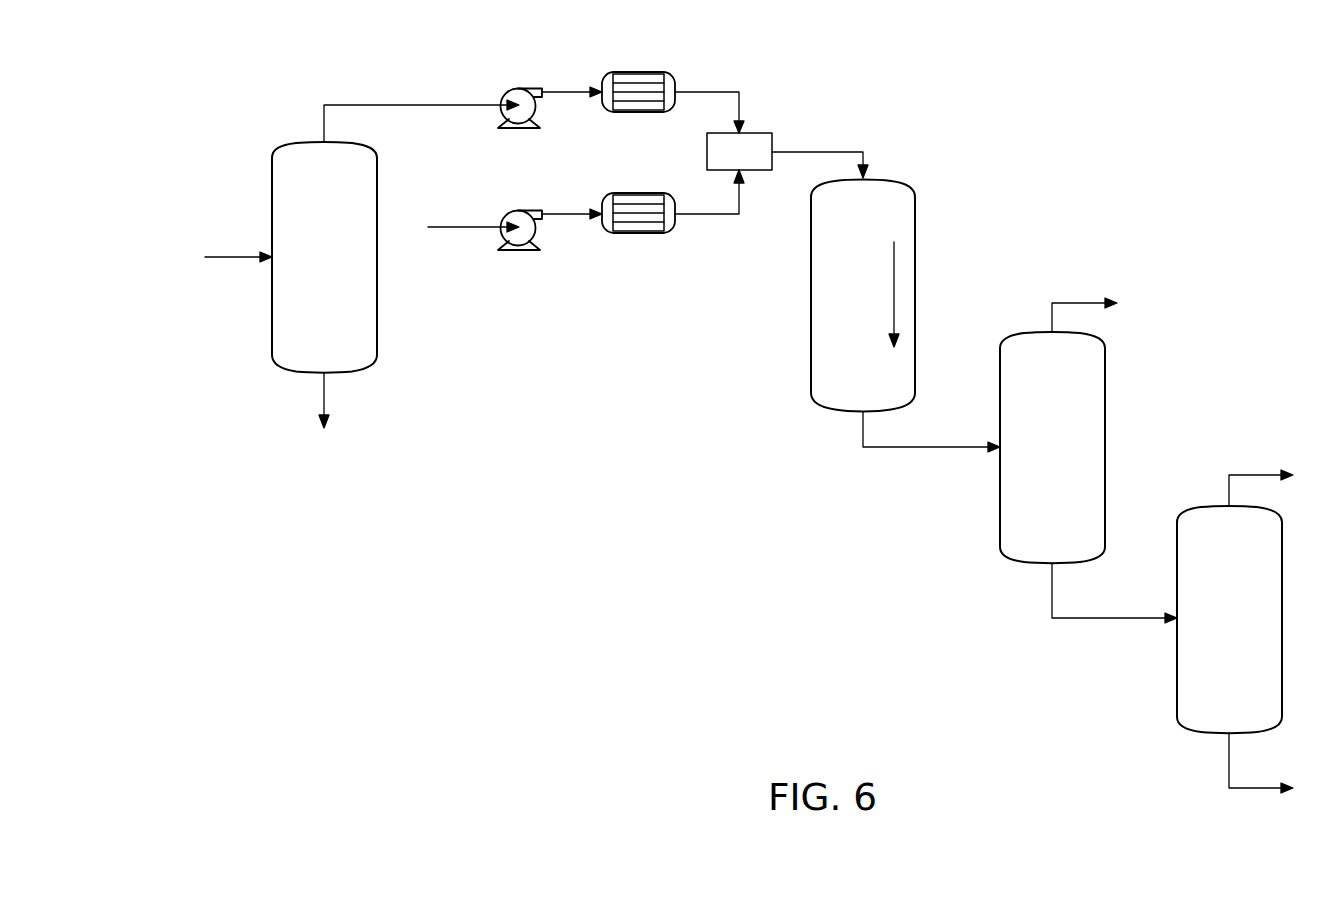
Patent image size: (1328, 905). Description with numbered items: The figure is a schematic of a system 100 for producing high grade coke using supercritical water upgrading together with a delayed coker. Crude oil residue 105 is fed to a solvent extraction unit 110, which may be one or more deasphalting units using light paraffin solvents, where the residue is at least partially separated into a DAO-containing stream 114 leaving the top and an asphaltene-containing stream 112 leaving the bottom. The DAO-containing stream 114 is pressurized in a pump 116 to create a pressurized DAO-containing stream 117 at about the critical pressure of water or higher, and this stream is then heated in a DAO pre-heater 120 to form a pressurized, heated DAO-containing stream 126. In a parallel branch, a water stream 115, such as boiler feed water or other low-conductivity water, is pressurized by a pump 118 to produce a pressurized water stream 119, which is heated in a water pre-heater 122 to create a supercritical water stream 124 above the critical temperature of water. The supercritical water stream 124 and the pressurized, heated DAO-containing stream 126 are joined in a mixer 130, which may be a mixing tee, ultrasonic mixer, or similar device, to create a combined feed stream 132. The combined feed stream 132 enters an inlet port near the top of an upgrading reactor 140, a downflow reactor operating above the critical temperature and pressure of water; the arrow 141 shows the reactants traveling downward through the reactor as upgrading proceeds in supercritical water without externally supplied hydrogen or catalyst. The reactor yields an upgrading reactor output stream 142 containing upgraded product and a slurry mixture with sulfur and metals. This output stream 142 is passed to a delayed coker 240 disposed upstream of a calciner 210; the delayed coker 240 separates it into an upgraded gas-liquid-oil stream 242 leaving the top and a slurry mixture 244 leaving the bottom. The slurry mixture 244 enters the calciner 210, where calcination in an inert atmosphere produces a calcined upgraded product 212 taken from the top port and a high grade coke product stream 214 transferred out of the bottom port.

The system 100 is at (176, 106).
The crude oil residue 105 is at (226, 256).
The solvent extraction unit 110 is at (342, 269).
The asphaltene-containing stream 112 is at (324, 392).
The DAO-containing stream 114 is at (438, 104).
The water stream 115 is at (451, 226).
The pump 116 is at (523, 88).
The pressurized DAO-containing stream 117 is at (560, 91).
The pump 118 is at (522, 210).
The pressurized water stream 119 is at (575, 213).
The DAO pre-heater 120 is at (640, 71).
The water pre-heater 122 is at (640, 192).
The supercritical water stream 124 is at (720, 215).
The pressurized, heated DAO-containing stream 126 is at (716, 91).
The mixer 130 is at (758, 164).
The combined feed stream 132 is at (812, 151).
The upgrading reactor 140 is at (864, 309).
The arrow 141 is at (895, 295).
The upgrading reactor output stream 142 is at (862, 426).
The calciner 210 is at (1248, 632).
The calcined upgraded product 212 is at (1252, 474).
The high grade coke product stream 214 is at (1252, 790).
The delayed coker 240 is at (1074, 462).
The upgraded gas-liquid-oil stream 242 is at (1074, 302).
The slurry mixture 244 is at (1110, 620).